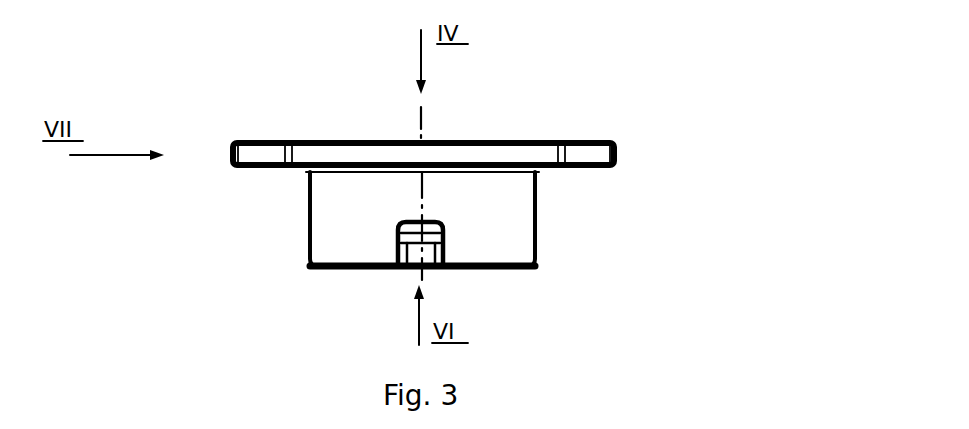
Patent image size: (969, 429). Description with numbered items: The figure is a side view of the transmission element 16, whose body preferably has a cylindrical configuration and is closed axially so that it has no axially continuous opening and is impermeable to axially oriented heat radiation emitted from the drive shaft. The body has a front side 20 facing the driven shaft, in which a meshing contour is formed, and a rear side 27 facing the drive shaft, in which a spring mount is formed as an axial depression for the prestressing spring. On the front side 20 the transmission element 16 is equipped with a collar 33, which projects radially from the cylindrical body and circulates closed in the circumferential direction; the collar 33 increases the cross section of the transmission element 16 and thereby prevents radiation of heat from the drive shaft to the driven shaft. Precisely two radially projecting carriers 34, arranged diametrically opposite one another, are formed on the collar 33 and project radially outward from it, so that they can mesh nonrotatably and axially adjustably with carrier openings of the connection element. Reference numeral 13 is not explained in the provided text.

The housing body 13 is at (540, 218).
The transmission element 16 is at (663, 116).
The front side 20 is at (419, 117).
The rear side 27 is at (343, 273).
The collar 33 is at (296, 147).
The carriers 34 is at (252, 152).